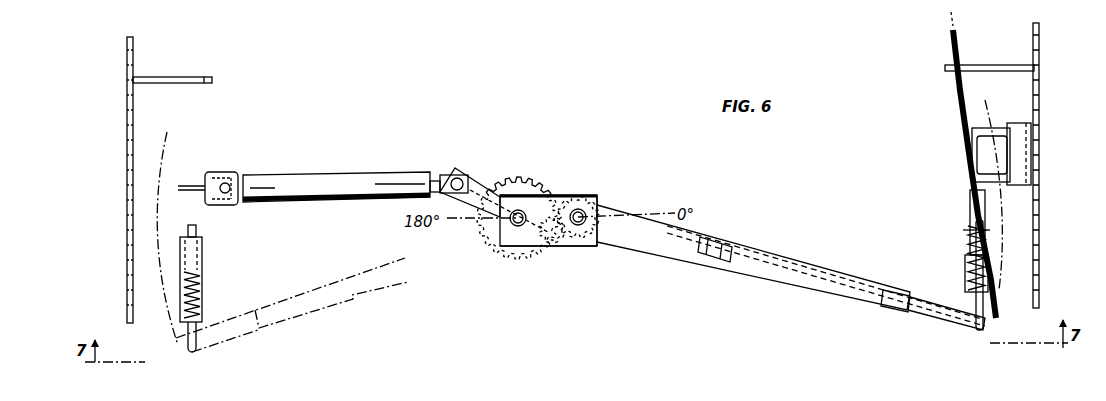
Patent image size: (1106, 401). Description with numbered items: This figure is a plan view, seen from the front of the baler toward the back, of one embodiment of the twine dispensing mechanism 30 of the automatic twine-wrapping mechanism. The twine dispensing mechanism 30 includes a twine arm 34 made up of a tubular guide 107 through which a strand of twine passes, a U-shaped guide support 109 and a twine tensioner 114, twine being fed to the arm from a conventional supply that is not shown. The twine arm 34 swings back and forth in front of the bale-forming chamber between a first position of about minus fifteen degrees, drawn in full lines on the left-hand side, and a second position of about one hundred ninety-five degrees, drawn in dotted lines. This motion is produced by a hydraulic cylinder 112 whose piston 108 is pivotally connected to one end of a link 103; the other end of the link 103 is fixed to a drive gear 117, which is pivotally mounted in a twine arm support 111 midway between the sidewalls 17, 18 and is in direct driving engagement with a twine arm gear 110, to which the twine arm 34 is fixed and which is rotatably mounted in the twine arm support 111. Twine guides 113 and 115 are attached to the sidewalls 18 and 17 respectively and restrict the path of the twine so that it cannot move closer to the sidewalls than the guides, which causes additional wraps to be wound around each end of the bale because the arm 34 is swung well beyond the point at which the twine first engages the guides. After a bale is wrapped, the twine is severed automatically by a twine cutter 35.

The sidewall 17 is at (127, 289).
The sidewall 18 is at (1040, 233).
The twine dispensing mechanism 30 is at (511, 166).
The twine arm 34 is at (352, 300).
The twine cutter 35 is at (951, 210).
The link 103 is at (478, 186).
The tubular guide 107 is at (925, 297).
The piston 108 is at (436, 178).
The U-shaped guide support 109 is at (663, 243).
The twine arm gear 110 is at (581, 246).
The twine arm support 111 is at (528, 238).
The hydraulic cylinder 112 is at (336, 182).
The twine guide 113 is at (990, 63).
The twine tensioner 114 is at (714, 272).
The twine guide 115 is at (187, 76).
The drive gear 117 is at (525, 186).